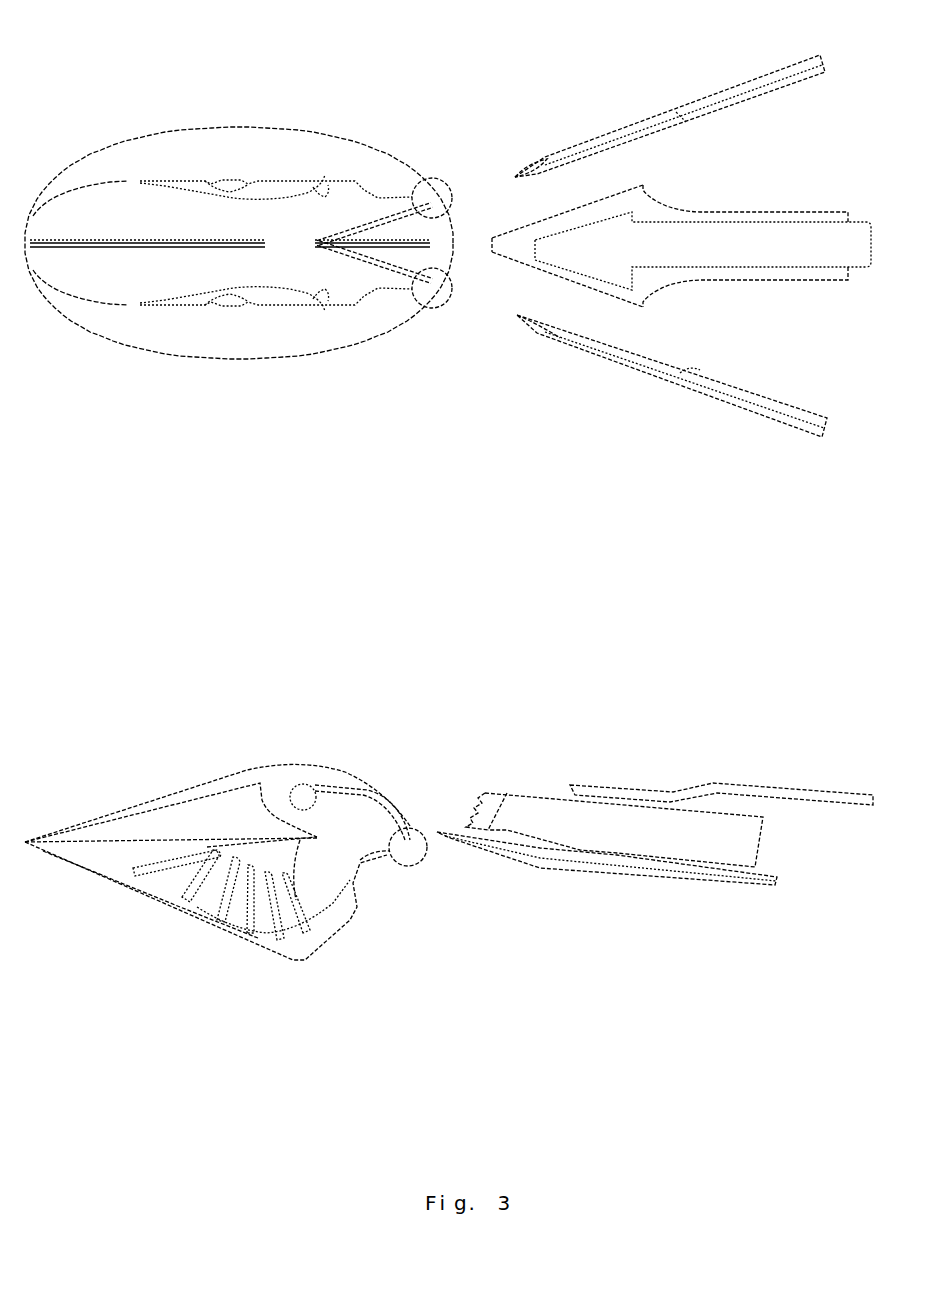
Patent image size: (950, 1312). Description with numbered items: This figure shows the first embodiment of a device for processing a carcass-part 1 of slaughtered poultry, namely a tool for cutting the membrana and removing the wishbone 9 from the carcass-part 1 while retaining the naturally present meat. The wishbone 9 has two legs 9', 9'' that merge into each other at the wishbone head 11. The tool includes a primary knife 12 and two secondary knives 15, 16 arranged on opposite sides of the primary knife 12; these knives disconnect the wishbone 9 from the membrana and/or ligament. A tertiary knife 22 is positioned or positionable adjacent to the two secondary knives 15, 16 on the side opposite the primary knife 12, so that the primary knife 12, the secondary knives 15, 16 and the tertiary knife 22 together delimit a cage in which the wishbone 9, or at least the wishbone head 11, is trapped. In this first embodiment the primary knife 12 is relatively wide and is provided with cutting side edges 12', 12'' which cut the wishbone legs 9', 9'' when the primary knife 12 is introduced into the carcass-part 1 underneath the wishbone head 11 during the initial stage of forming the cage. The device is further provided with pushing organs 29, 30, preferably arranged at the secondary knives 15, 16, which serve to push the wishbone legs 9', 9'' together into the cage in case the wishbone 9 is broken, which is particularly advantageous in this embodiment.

The carcass-part 1 is at (148, 358).
The wishbone 9 is at (371, 743).
The wishbone leg 9' is at (384, 125).
The wishbone leg 9'' is at (384, 372).
The wishbone head 11 is at (329, 236).
The primary knife 12 is at (657, 538).
The cutting side edge 12' is at (567, 121).
The cutting side edge 12'' is at (564, 377).
The secondary knife 15 is at (599, 131).
The secondary knife 16 is at (632, 375).
The tertiary knife 22 is at (617, 237).
The pushing organ 29 is at (684, 129).
The pushing organ 30 is at (690, 368).